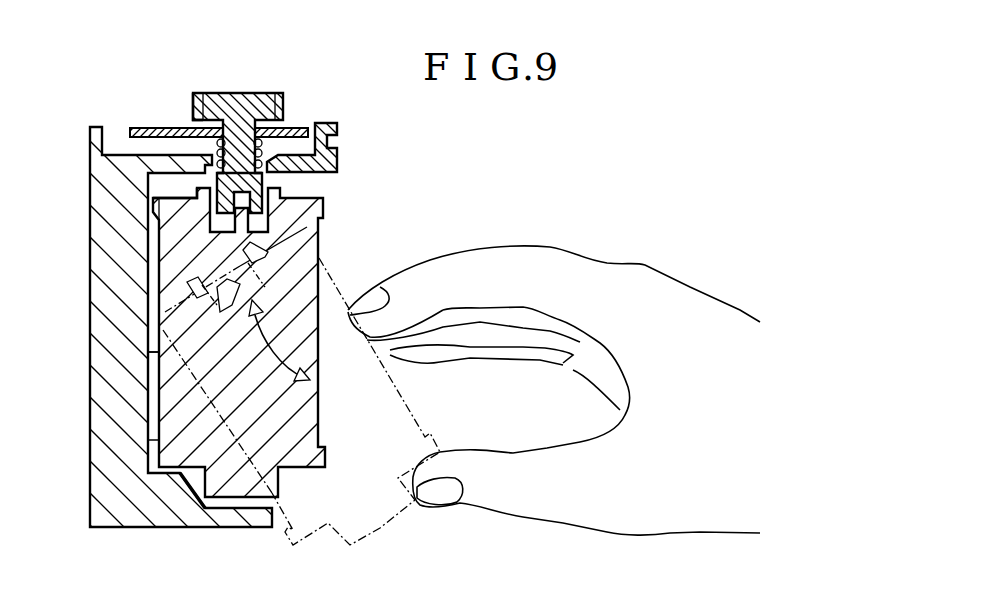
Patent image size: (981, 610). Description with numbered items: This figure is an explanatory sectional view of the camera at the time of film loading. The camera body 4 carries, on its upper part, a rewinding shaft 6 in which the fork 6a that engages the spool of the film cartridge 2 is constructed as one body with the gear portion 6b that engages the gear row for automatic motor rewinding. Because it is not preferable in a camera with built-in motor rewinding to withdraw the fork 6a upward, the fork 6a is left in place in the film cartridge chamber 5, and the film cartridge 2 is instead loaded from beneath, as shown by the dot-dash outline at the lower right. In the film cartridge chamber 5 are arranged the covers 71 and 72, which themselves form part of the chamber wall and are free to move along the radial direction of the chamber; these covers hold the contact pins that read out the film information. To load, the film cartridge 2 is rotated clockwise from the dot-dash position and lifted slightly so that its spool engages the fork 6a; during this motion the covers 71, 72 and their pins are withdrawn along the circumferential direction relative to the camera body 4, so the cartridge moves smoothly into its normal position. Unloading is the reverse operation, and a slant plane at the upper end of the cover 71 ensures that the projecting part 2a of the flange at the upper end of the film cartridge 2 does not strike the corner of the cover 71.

The film cartridge 2 is at (322, 231).
The projecting part of the flange portion 2a is at (163, 205).
The camera body 4 is at (90, 341).
The film cartridge chamber 5 is at (195, 480).
The rewinding shaft 6 is at (237, 110).
The fork 6a is at (252, 182).
The gear portion 6b is at (192, 108).
The cover 71 is at (150, 272).
The cover 72 is at (150, 398).